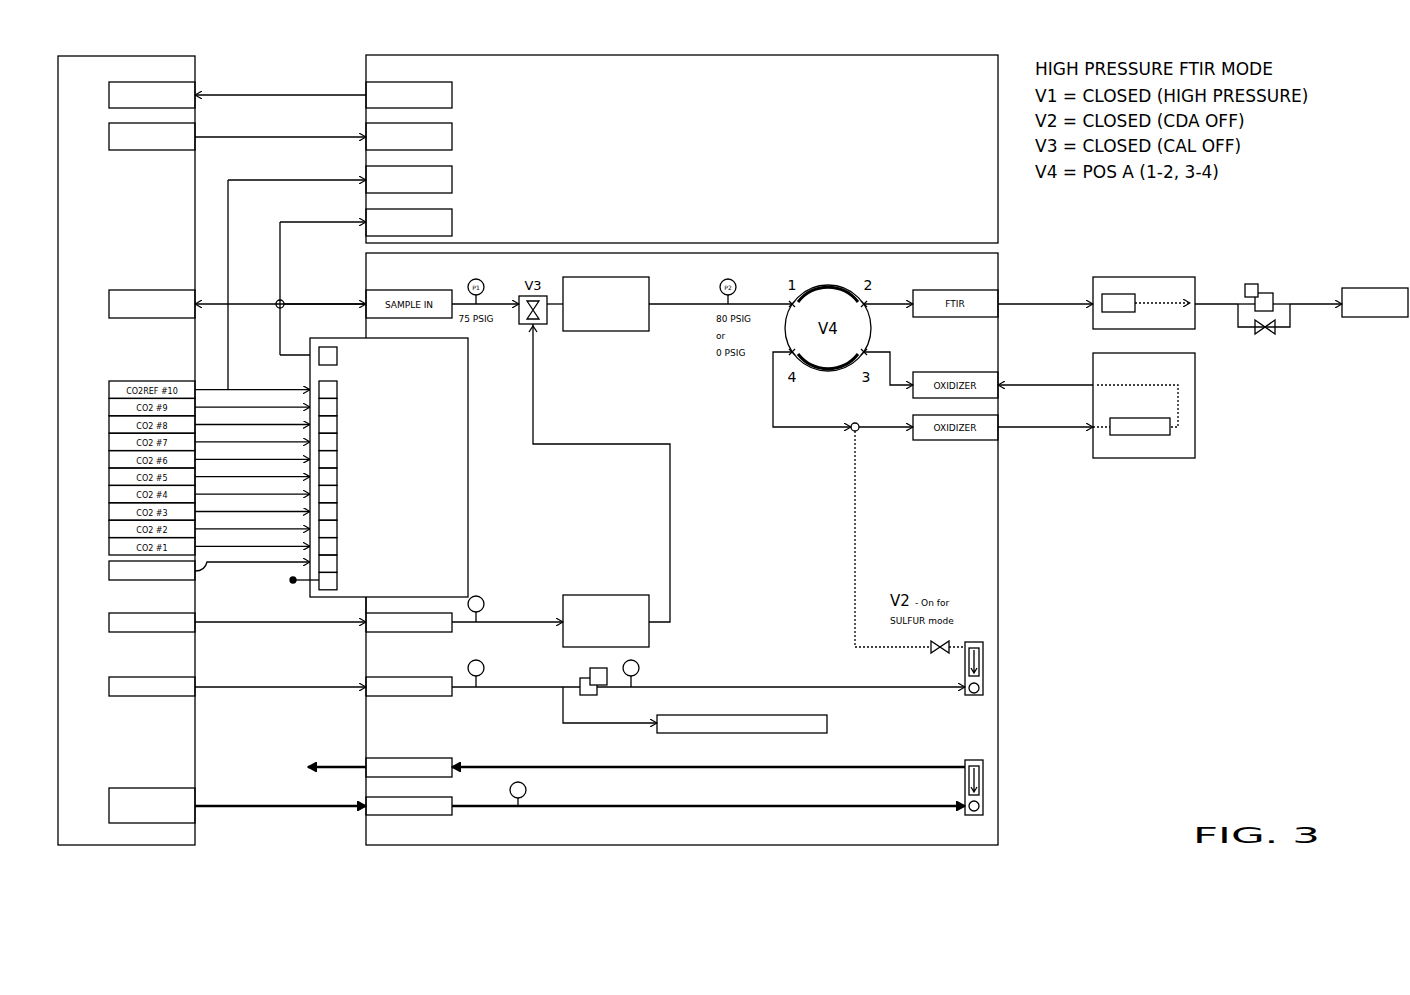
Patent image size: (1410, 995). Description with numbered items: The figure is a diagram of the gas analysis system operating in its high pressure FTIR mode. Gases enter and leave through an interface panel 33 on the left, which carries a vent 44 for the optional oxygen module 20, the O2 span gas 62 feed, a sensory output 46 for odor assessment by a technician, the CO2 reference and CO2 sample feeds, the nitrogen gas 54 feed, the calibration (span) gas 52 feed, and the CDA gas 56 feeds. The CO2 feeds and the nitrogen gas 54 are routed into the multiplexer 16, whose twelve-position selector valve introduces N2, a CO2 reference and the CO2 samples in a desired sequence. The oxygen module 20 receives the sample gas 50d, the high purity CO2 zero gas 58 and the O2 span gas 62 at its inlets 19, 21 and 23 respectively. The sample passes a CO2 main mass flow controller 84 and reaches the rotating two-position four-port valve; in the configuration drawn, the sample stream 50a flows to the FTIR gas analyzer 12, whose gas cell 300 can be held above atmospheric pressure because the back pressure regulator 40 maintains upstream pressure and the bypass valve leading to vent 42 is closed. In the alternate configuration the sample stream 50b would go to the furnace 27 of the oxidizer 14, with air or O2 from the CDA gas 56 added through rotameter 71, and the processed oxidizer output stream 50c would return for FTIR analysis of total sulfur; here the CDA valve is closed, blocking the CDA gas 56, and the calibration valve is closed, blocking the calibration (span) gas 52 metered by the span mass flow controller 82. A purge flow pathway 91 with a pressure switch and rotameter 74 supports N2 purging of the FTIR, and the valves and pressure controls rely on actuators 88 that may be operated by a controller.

The FTIR gas analyzer 12 is at (1144, 280).
The oxidizer 14 is at (1174, 425).
The multiplexer 16 is at (379, 475).
The sample inlet of oxygen module 19 is at (454, 222).
The oxygen module 20 is at (682, 149).
The zero gas inlet of oxygen module 21 is at (454, 180).
The span gas inlet of oxygen module 23 is at (454, 136).
The furnace 27 is at (1165, 436).
The interface panel 33 is at (126, 450).
The back pressure regulator 40 is at (1268, 292).
The vent 42 is at (1349, 314).
The vent 44 is at (200, 90).
The sensory output 46 is at (136, 304).
The sample stream 50a is at (1045, 292).
The sample stream 50b is at (1045, 419).
The oxidizer output stream 50c is at (1045, 375).
The sample gas 50d is at (282, 282).
The calibration (span) gas 52 is at (326, 630).
The nitrogen gas 54 is at (258, 570).
The CDA gas 56 is at (298, 692).
The high purity CO2 gas 58 is at (240, 360).
The O2 span gas 62 is at (237, 133).
The rotameter 71 is at (985, 668).
The rotameter 74 is at (985, 786).
The span (calibration) mass flow controller 82 is at (600, 595).
The CO2 main mass flow controller 84 is at (604, 331).
The actuators 88 is at (828, 728).
The purge flow pathway 91 is at (912, 766).
The gas cell 300 is at (1112, 294).